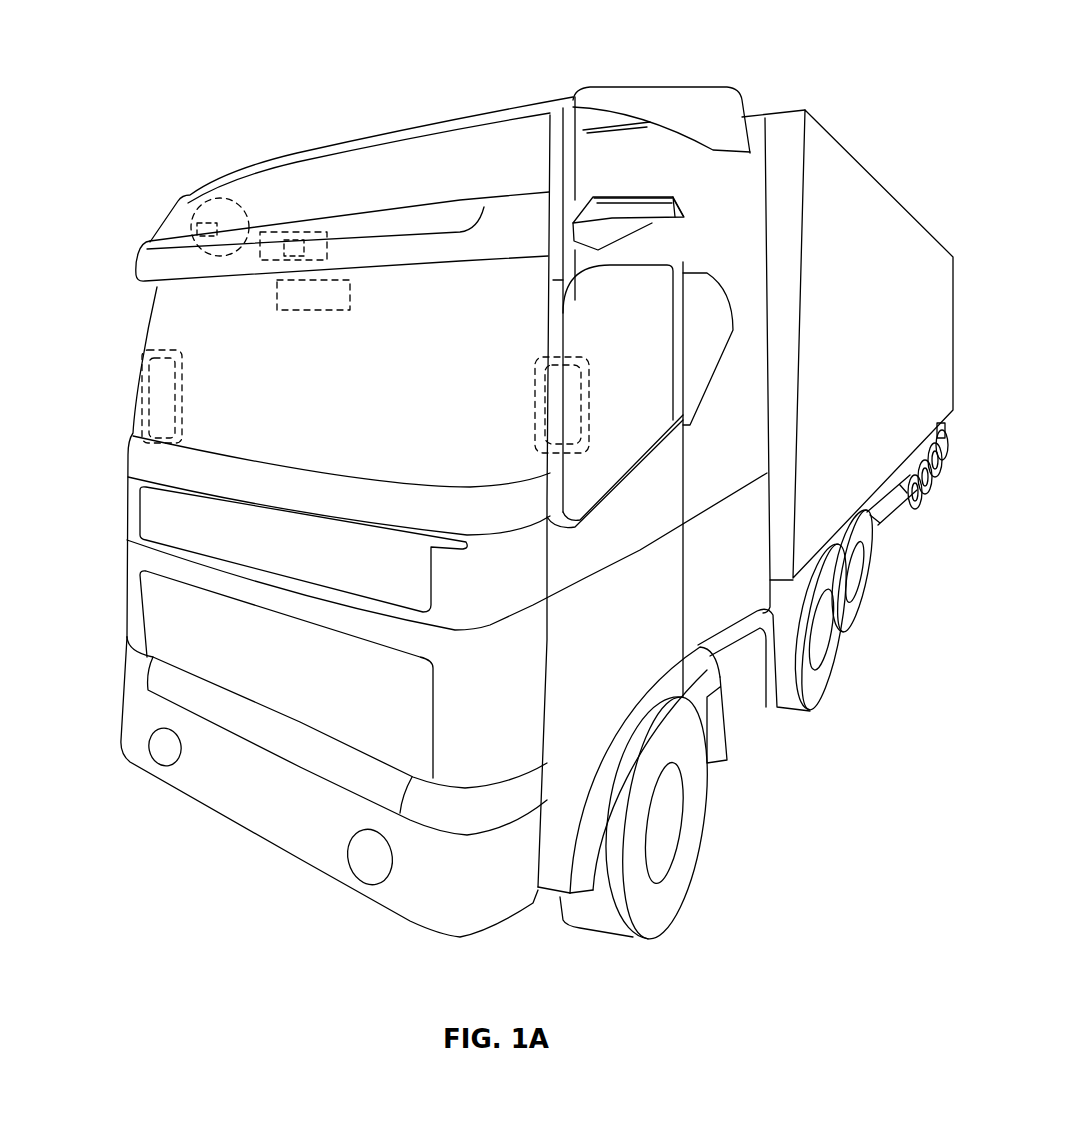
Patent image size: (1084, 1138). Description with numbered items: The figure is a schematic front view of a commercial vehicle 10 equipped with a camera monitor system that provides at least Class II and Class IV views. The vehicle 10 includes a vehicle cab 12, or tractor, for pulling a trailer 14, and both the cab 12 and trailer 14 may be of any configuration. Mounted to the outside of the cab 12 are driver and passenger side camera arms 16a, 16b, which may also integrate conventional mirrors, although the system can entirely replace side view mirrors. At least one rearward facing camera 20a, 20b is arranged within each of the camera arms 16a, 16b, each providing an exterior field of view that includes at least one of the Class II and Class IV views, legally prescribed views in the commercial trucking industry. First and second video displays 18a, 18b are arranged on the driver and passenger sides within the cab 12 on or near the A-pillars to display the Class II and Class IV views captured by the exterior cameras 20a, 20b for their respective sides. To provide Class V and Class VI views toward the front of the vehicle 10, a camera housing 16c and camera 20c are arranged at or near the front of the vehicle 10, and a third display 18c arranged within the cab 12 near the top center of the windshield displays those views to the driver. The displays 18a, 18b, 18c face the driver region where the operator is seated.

The commercial vehicle 10 is at (885, 52).
The vehicle cab 12 is at (110, 514).
The trailer 14 is at (912, 240).
The driver side camera arm 16a is at (637, 207).
The passenger side camera arm 16b is at (220, 200).
The camera housing 16c is at (300, 228).
The first video display 18a is at (528, 407).
The second video display 18b is at (182, 395).
The third display 18c is at (350, 290).
The rearward facing camera 20a is at (685, 206).
The rearward facing camera 20b is at (193, 223).
The camera 20c is at (290, 257).